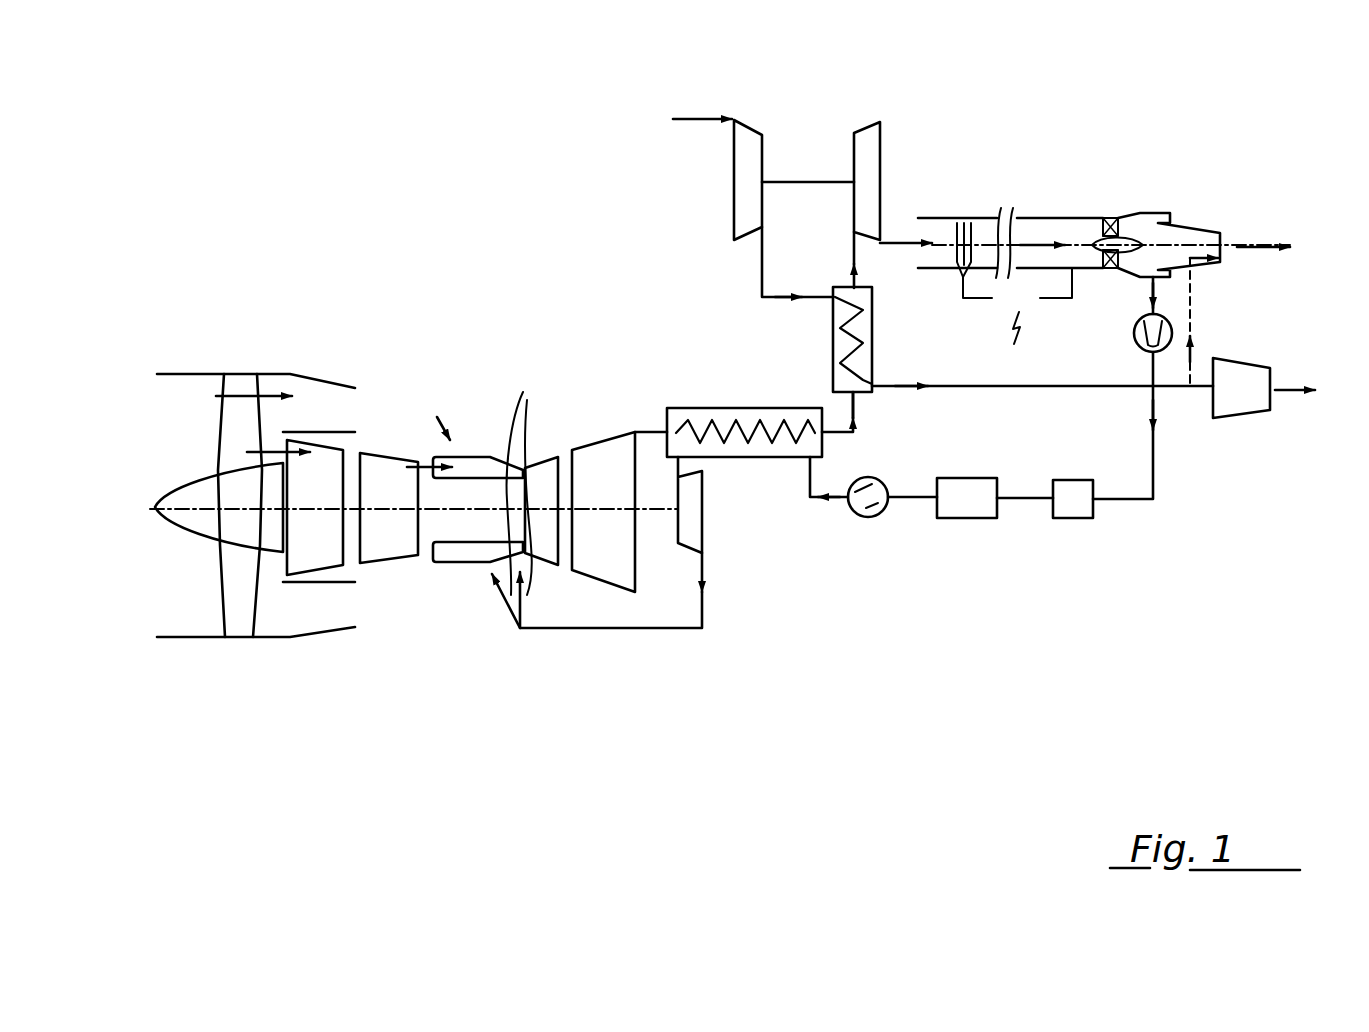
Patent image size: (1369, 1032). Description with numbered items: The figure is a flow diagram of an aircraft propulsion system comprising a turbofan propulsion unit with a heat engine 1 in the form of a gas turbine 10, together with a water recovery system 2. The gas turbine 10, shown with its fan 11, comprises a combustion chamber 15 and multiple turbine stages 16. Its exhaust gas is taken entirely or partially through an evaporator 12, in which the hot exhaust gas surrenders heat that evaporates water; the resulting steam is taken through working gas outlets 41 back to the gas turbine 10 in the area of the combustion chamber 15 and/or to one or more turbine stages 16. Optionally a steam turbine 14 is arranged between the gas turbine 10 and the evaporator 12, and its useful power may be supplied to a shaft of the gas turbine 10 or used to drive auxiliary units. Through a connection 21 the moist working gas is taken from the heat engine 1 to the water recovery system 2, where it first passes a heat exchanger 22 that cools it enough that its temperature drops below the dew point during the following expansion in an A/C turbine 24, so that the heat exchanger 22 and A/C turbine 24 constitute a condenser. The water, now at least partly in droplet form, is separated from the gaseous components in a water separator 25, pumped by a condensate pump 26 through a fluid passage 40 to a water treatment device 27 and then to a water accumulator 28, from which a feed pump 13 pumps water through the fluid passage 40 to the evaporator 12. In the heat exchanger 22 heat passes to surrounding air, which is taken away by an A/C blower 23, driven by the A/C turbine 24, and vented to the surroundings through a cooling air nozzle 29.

The heat engine 1 is at (312, 258).
The water recovery system 2 is at (648, 177).
The gas turbine 10 is at (385, 652).
The fan 11 is at (237, 603).
The evaporator 12 is at (760, 447).
The feed pump 13 is at (873, 508).
The steam turbine 14 is at (690, 533).
The combustion chamber 15 is at (472, 553).
The turbine stages 16 is at (545, 550).
The connection 21 is at (858, 410).
The heat exchanger 22 is at (870, 340).
The A/C blower 23 is at (745, 145).
The A/C turbine 24 is at (870, 150).
The water separator 25 is at (1057, 212).
The condensate pump 26 is at (1170, 330).
The water treatment device 27 is at (1077, 513).
The water accumulator 28 is at (975, 510).
The cooling air nozzle 29 is at (1250, 400).
The fluid passage 40 is at (1153, 500).
The working gas outlets 41 is at (532, 481).